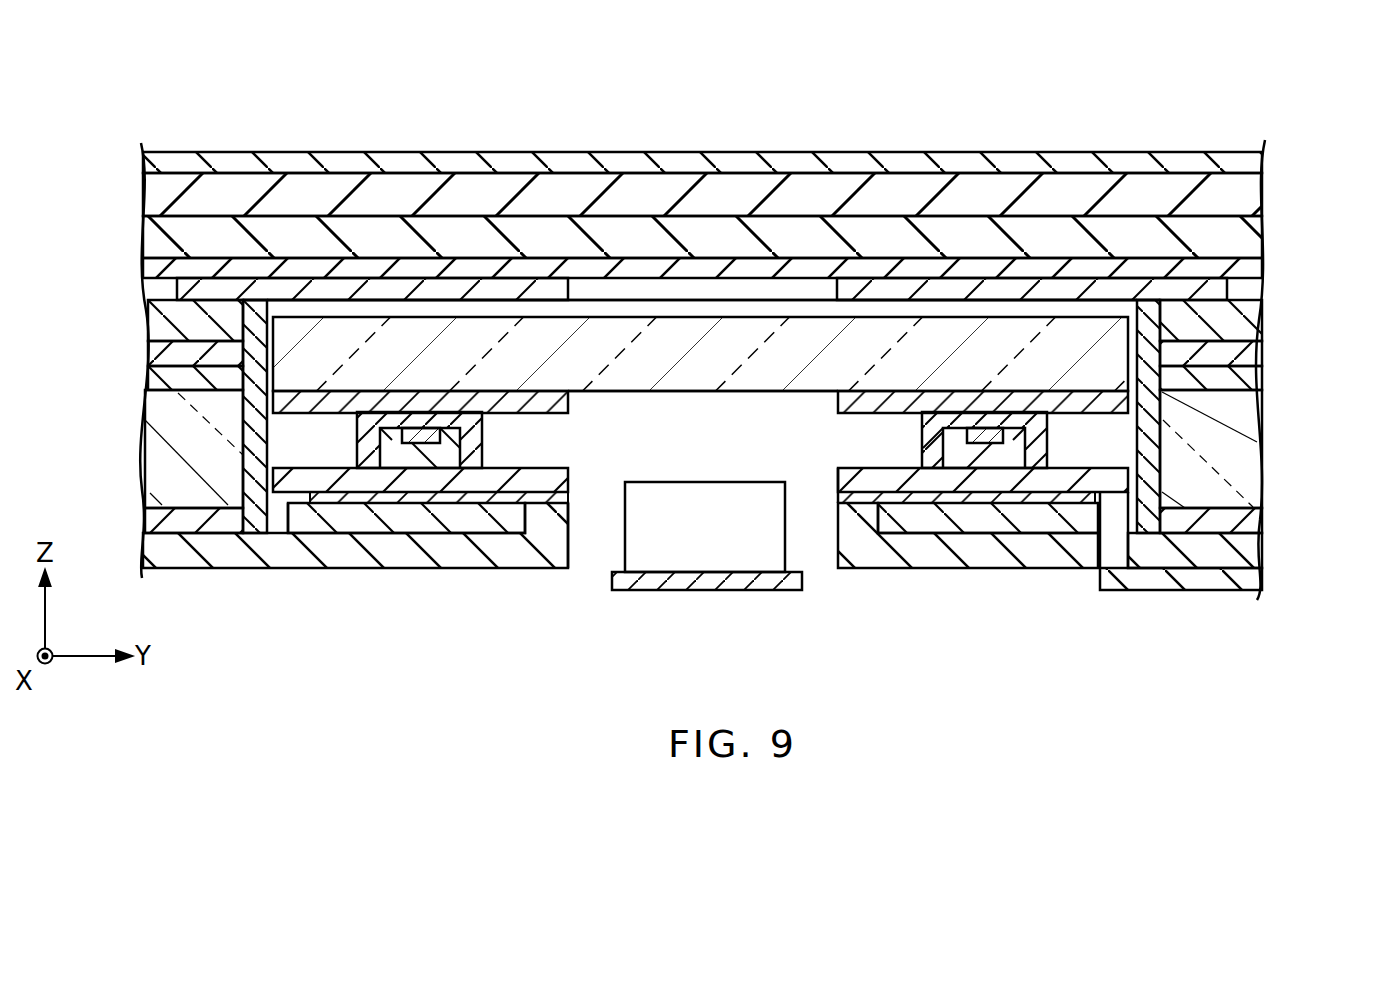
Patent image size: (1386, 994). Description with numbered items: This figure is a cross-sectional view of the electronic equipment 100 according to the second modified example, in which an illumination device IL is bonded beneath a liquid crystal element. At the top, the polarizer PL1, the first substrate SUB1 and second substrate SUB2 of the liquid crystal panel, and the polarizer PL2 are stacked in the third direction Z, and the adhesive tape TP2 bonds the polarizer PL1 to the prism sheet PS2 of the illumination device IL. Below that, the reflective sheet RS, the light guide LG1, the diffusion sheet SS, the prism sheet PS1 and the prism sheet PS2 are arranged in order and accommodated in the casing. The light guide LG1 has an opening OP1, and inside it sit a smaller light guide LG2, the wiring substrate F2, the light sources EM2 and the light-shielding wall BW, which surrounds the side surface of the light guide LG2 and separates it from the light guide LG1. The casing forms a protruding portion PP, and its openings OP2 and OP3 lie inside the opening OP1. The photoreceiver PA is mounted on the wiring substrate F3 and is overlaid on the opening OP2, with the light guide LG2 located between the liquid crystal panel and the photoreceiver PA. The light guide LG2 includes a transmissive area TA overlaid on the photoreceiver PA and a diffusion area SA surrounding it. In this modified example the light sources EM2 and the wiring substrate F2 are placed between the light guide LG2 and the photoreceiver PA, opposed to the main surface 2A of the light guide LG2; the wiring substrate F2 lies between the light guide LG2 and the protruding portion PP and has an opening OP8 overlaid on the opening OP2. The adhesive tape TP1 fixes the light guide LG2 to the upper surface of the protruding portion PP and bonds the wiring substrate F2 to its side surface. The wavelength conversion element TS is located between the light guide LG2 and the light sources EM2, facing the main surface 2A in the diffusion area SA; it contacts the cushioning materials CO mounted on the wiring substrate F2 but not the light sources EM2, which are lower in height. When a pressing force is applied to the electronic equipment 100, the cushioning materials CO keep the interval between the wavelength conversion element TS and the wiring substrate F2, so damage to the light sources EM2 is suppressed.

The electronic equipment 100 is at (1232, 128).
The polarizer PL2 is at (1248, 163).
The second substrate SUB2 is at (1250, 192).
The first substrate SUB1 is at (1255, 236).
The polarizer PL1 is at (1250, 268).
The adhesive tape TP2 is at (1240, 292).
The prism sheet PS2 is at (1240, 322).
The prism sheet PS1 is at (1245, 352).
The diffusion sheet SS is at (1245, 379).
The light guide LG1 is at (1250, 437).
The light guide LG2 is at (728, 316).
The illumination device IL is at (1271, 483).
The reflective sheet RS is at (1250, 521).
The wiring substrate F2 is at (1250, 583).
The wiring substrate F3 is at (683, 590).
The light-shielding wall BW is at (1150, 522).
The opening OP1 is at (271, 502).
The opening OP2 is at (591, 545).
The opening OP3 is at (1115, 545).
The opening OP8 is at (812, 472).
The diffusion area SA is at (533, 314).
The transmissive area TA is at (650, 314).
The wavelength conversion element TS is at (567, 396).
The main surface 2A is at (672, 395).
The light source EM2 is at (385, 457).
The cushioning material CO is at (482, 444).
The adhesive tape TP1 is at (556, 493).
The protruding portion PP is at (572, 541).
The photoreceiver PA is at (790, 553).